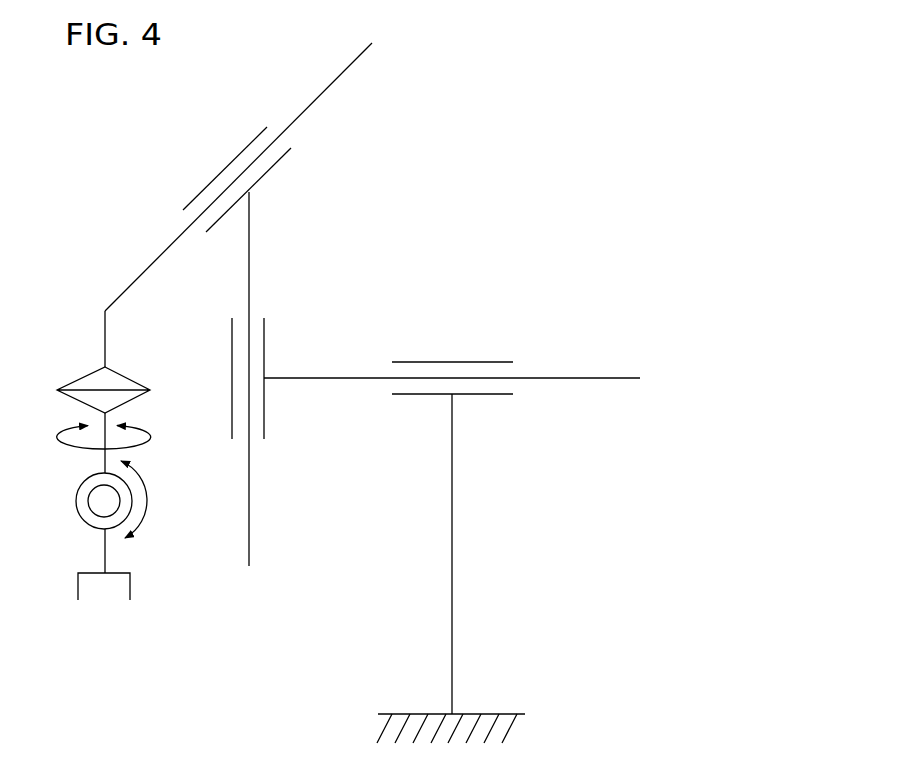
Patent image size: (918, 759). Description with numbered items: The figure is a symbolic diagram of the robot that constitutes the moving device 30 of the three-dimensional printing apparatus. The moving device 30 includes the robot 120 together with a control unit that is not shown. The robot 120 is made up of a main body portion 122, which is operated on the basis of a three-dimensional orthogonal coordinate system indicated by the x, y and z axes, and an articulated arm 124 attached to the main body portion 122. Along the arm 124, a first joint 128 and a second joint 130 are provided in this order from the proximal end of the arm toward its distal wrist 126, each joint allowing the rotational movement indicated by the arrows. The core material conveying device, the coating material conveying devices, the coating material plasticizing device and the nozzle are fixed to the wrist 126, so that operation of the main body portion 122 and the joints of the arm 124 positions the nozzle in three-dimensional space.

The moving device 30 is at (578, 52).
The robot 120 is at (231, 675).
The main body portion 122 is at (234, 562).
The arm 124 is at (111, 602).
The wrist 126 is at (77, 585).
The first joint 128 is at (127, 378).
The second joint 130 is at (77, 483).